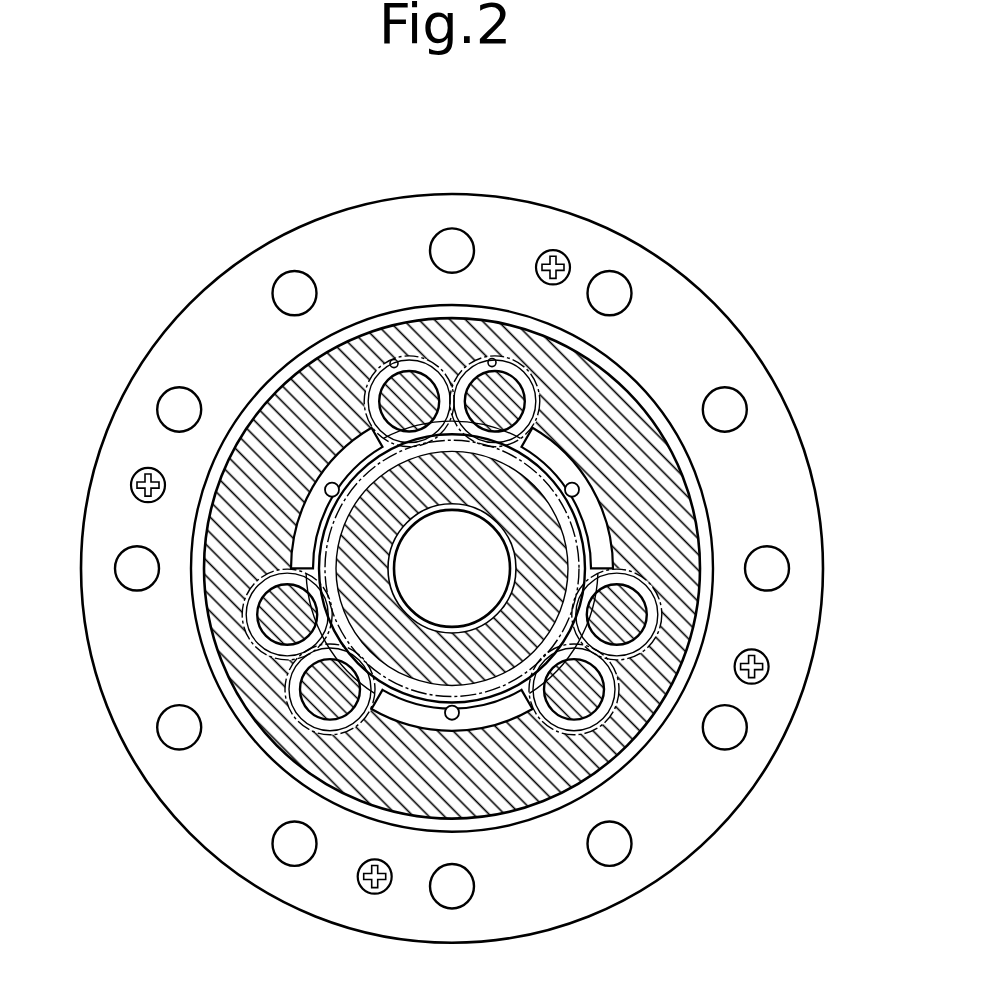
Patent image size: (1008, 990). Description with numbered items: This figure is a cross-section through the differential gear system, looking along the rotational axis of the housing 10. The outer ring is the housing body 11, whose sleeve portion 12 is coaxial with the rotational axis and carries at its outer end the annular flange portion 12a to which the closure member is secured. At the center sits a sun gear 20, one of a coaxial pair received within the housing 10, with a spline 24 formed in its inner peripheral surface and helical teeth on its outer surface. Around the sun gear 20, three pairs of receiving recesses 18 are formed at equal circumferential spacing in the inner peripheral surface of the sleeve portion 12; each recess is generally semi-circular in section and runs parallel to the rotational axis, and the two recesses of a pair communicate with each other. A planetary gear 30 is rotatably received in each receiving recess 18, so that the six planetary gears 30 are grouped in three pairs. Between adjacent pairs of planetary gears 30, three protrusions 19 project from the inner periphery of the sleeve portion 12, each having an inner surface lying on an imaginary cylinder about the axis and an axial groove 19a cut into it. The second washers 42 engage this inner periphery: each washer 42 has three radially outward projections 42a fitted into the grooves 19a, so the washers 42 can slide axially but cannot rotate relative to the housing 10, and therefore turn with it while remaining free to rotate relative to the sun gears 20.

The housing 10 is at (668, 226).
The housing body 11 is at (186, 306).
The sleeve portion 12 is at (600, 367).
The annular flange portion 12a is at (233, 262).
The receiving recesses 18 is at (393, 360).
The protrusions 19 is at (572, 466).
The groove 19a is at (583, 484).
The sun gear 20 is at (502, 643).
The spline 24 is at (405, 592).
The planetary gears 30 is at (410, 385).
The second washers 42 is at (720, 553).
The projections 42a is at (583, 493).